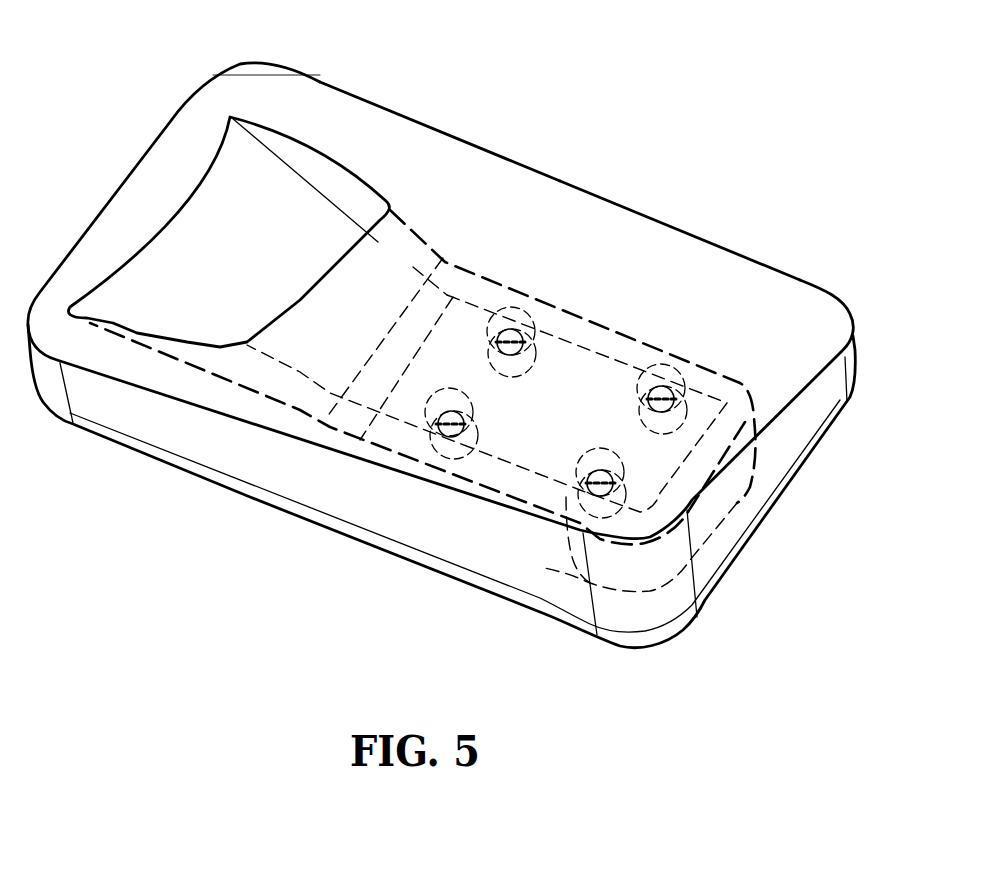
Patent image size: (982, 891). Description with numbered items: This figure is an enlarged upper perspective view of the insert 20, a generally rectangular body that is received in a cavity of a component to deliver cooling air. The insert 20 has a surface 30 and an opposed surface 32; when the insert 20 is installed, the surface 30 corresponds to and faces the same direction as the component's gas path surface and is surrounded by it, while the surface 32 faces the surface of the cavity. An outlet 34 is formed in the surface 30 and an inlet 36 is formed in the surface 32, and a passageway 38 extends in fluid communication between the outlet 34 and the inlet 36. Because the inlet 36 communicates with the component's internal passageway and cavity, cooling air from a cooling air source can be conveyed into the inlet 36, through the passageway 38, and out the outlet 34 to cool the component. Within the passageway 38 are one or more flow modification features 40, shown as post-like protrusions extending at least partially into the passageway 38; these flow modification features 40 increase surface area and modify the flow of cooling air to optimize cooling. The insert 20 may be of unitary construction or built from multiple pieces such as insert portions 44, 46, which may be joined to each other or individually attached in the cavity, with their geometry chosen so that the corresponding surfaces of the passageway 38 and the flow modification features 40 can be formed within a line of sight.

The insert 20 is at (387, 550).
The surface 30 is at (456, 197).
The opposed surface 32 is at (300, 521).
The outlet 34 is at (278, 210).
The inlet 36 is at (737, 500).
The passageway 38 is at (277, 403).
The flow modification features 40 is at (583, 493).
The insert portion 44 is at (546, 178).
The insert portion 46 is at (698, 236).